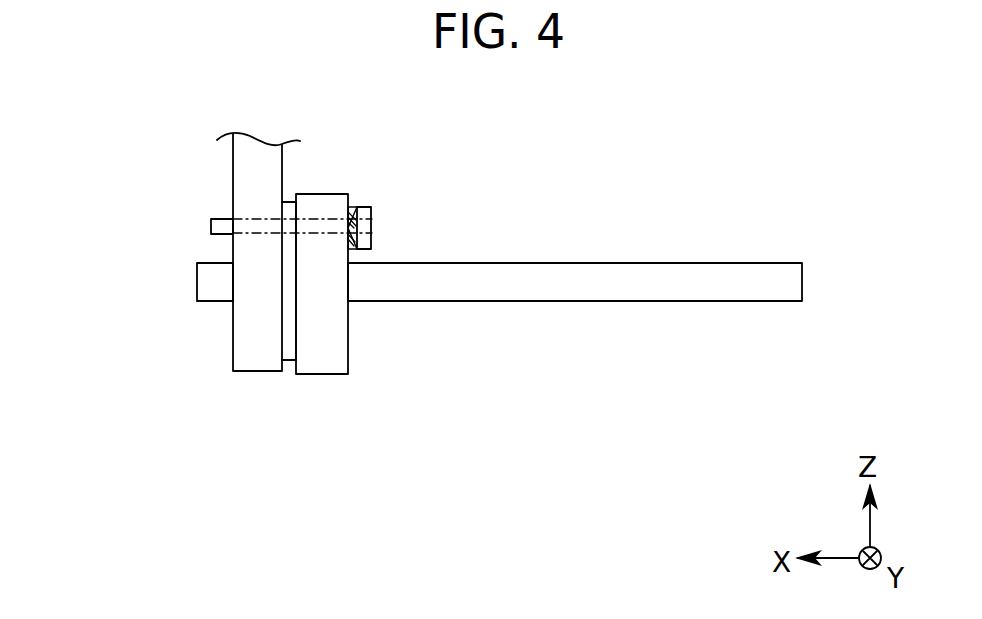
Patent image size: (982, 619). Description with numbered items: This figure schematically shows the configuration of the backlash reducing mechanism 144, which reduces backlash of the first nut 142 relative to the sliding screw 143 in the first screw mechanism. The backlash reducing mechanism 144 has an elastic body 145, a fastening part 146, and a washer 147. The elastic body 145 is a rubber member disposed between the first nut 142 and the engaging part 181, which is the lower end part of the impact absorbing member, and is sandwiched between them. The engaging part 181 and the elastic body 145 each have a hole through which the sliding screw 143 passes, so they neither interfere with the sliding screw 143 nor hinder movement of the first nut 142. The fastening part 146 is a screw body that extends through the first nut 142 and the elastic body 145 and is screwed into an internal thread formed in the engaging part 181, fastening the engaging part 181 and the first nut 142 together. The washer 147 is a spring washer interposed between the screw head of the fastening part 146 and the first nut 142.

The engaging part 181 is at (252, 320).
The first nut 142 is at (325, 360).
The sliding screw 143 is at (473, 290).
The backlash reducing mechanism 144 is at (269, 393).
The elastic body 145 is at (290, 352).
The fastening part 146 is at (358, 227).
The washer 147 is at (352, 207).